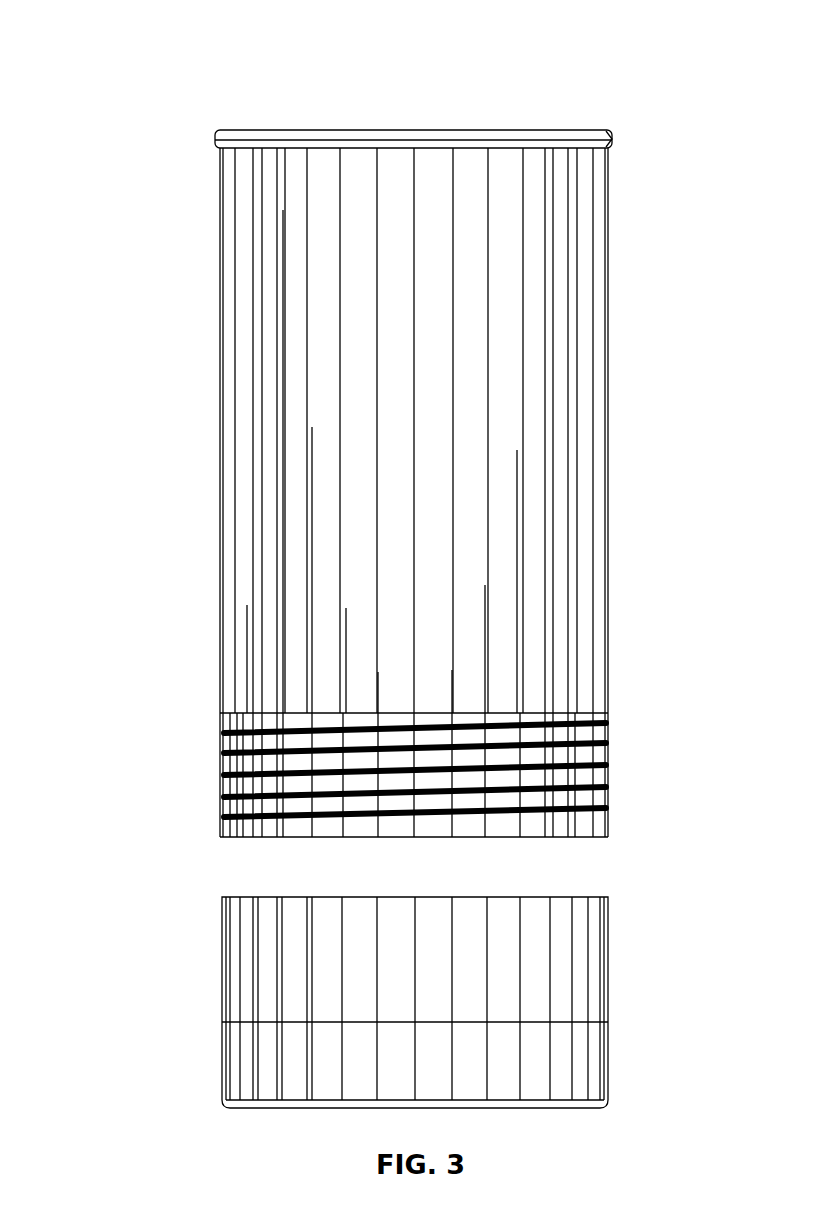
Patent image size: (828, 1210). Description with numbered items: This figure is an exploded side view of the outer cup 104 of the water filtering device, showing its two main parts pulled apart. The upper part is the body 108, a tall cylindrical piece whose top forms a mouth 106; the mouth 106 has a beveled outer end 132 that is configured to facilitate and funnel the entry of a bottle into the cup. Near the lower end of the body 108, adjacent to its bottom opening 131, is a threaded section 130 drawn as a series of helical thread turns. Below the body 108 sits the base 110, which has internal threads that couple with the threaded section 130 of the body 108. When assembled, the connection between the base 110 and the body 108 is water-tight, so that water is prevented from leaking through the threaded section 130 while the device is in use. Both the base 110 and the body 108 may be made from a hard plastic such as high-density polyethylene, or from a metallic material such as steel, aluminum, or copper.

The outer cup 104 is at (118, 122).
The mouth 106 is at (334, 136).
The body 108 is at (220, 318).
The base 110 is at (222, 982).
The threaded section 130 is at (223, 797).
The bottom opening 131 is at (583, 838).
The beveled outer end 132 is at (612, 150).